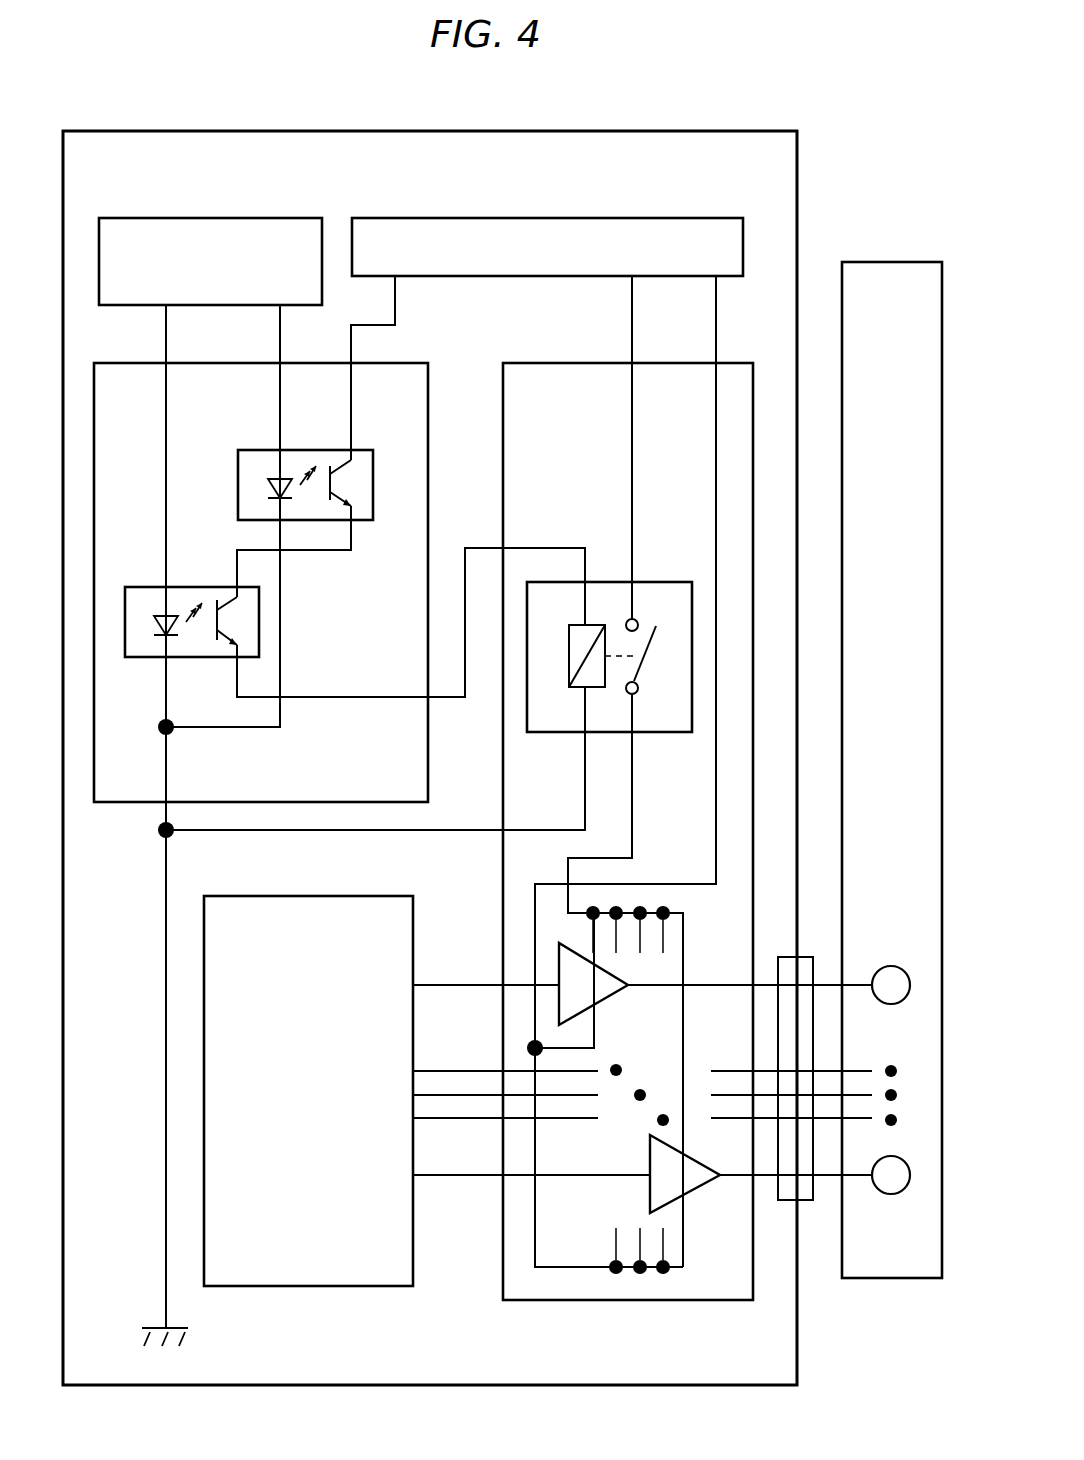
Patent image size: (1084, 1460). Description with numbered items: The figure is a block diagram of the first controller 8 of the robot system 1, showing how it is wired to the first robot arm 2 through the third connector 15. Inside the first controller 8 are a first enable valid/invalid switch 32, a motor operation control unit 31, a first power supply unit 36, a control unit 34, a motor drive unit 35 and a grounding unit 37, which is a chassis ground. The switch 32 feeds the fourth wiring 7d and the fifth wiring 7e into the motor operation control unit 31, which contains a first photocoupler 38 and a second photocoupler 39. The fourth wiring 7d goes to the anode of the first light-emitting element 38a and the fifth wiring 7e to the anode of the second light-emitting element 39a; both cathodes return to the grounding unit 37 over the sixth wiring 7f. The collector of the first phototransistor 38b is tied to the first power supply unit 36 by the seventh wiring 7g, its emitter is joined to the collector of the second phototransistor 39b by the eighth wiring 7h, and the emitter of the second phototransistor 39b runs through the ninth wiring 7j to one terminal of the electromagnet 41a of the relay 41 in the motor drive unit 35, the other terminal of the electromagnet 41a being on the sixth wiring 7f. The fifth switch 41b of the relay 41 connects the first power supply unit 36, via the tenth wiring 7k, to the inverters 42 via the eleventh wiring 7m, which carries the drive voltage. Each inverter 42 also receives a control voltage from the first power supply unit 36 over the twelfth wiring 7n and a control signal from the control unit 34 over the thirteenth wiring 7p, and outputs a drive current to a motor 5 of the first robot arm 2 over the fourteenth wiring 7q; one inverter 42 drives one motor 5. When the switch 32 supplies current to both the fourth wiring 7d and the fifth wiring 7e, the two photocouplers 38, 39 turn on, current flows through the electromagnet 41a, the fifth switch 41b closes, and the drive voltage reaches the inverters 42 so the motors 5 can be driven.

The robot system 1 is at (865, 114).
The first robot arm 2 is at (905, 262).
The motor 5 is at (891, 966).
The first controller 8 is at (765, 131).
The third connector 15 is at (804, 957).
The motor operation control unit 31 is at (378, 363).
The first enable valid/invalid switch 32 is at (275, 218).
The control unit 34 is at (365, 896).
The motor drive unit 35 is at (525, 363).
The first power supply unit 36 is at (695, 218).
The grounding unit 37 is at (150, 1328).
The first photocoupler 38 is at (296, 450).
The first light-emitting element 38a is at (276, 478).
The first phototransistor 38b is at (346, 475).
The second photocoupler 39 is at (178, 587).
The second light-emitting element 39a is at (163, 614).
The second phototransistor 39b is at (232, 612).
The relay 41 is at (650, 582).
The electromagnet 41a is at (578, 688).
The fifth switch 41b is at (643, 665).
The inverter 42 is at (604, 1003).
The fourth wiring 7d is at (280, 339).
The fifth wiring 7e is at (166, 339).
The sixth wiring 7f is at (166, 1215).
The seventh wiring 7g is at (396, 300).
The eighth wiring 7h is at (334, 556).
The ninth wiring 7j is at (387, 697).
The tenth wiring 7k is at (632, 302).
The eleventh wiring 7m is at (634, 826).
The twelfth wiring 7n is at (718, 300).
The thirteenth wiring 7p is at (457, 984).
The fourteenth wiring 7q is at (713, 984).